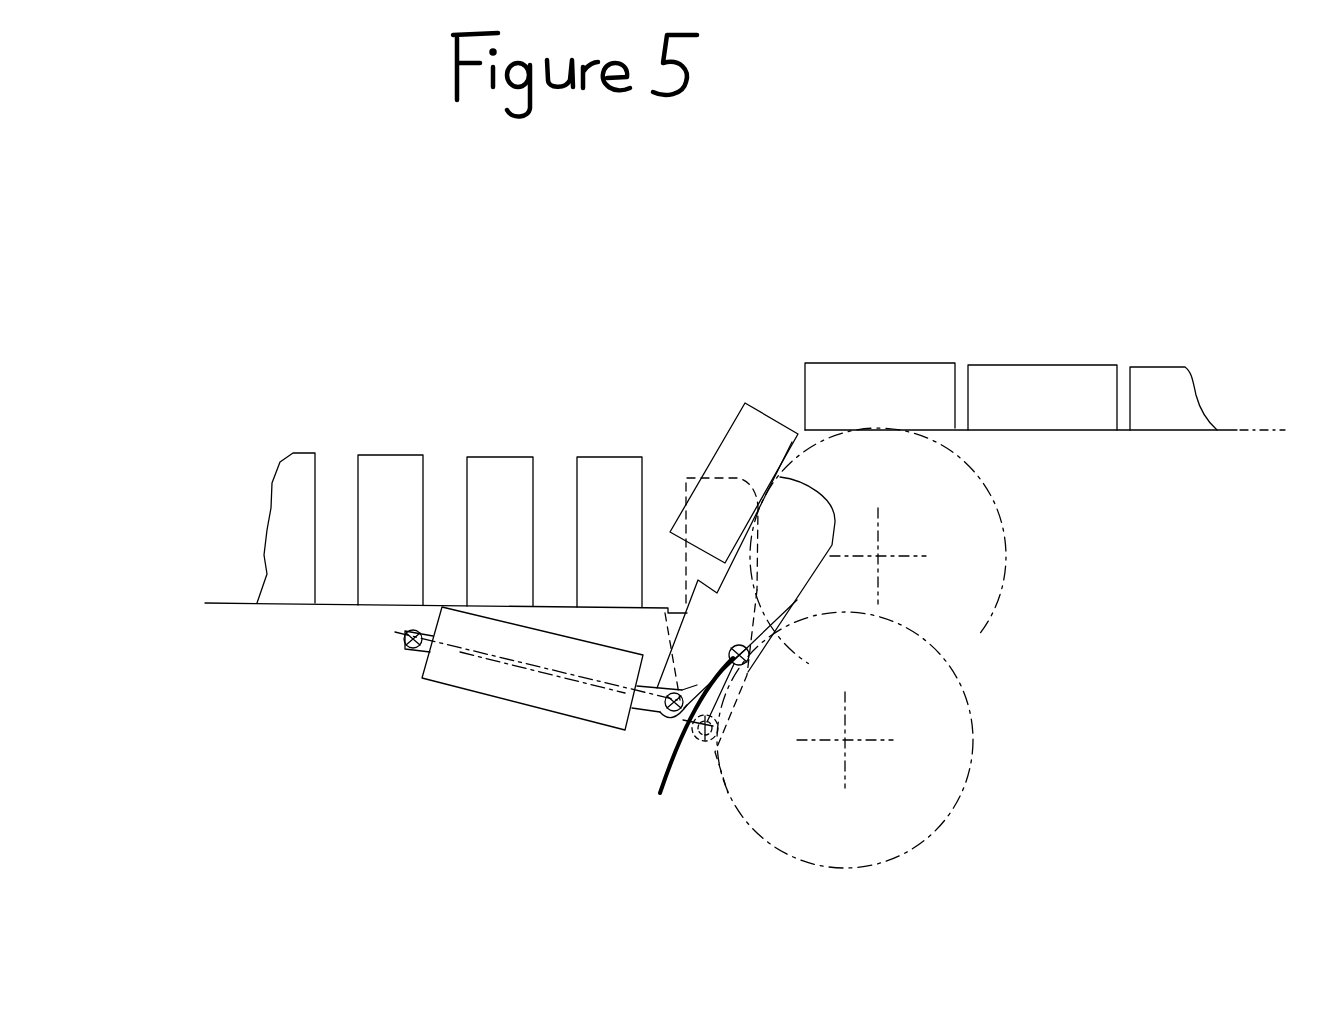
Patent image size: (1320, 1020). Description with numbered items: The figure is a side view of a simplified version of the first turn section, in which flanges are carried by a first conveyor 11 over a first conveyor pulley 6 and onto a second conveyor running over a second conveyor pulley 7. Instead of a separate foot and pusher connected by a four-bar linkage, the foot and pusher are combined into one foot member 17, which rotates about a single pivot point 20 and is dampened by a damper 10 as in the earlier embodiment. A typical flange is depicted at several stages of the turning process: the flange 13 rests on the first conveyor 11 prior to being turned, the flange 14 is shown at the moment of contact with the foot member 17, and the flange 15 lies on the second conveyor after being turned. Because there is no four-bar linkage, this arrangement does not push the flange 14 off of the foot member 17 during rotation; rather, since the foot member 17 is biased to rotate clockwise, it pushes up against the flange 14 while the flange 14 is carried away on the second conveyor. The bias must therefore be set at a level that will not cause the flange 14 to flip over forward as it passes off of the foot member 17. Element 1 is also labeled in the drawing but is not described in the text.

The pivot 1 is at (408, 645).
The first conveyor pulley 6 is at (995, 605).
The second conveyor pulley 7 is at (960, 792).
The damper 10 is at (507, 702).
The first conveyor 11 is at (1095, 432).
The flange 13 is at (860, 364).
The flange 14 is at (730, 423).
The flange 15 is at (586, 460).
The foot member 17 is at (807, 500).
The single pivot point 20 is at (684, 751).